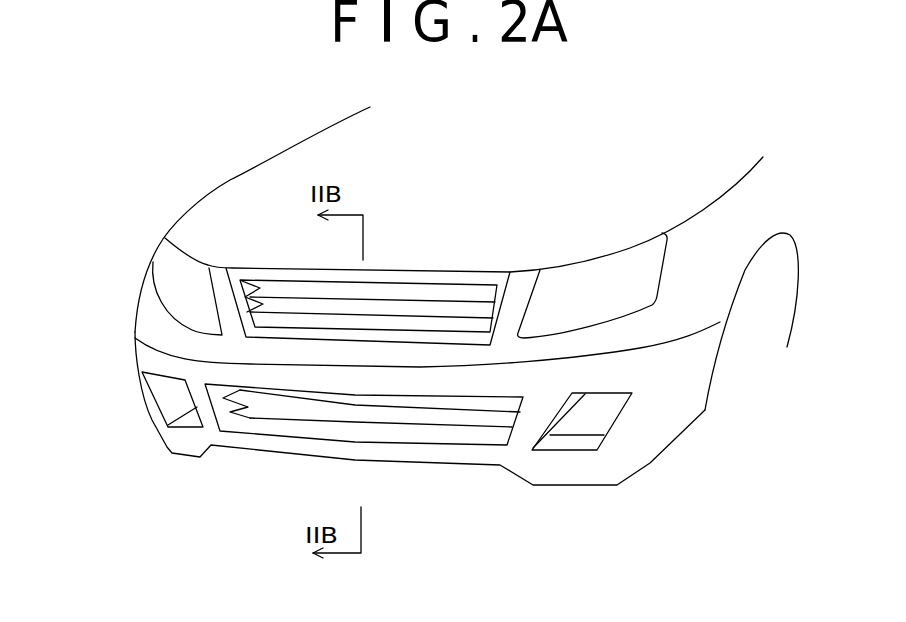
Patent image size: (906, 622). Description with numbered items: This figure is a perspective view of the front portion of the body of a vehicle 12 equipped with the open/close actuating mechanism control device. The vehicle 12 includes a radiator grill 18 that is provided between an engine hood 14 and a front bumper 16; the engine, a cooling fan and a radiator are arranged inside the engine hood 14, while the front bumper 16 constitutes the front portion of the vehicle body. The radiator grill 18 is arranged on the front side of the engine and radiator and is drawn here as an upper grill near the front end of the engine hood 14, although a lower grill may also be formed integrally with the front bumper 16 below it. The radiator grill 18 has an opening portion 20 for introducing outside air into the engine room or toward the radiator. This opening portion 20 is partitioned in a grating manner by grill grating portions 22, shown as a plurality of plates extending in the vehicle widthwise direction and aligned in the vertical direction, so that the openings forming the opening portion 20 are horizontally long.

The vehicle 12 is at (735, 278).
The engine hood 14 is at (227, 198).
The front bumper 16 is at (153, 415).
The radiator grill 18 is at (231, 337).
The opening portion 20 is at (300, 283).
The grill grating portions 22 is at (428, 304).